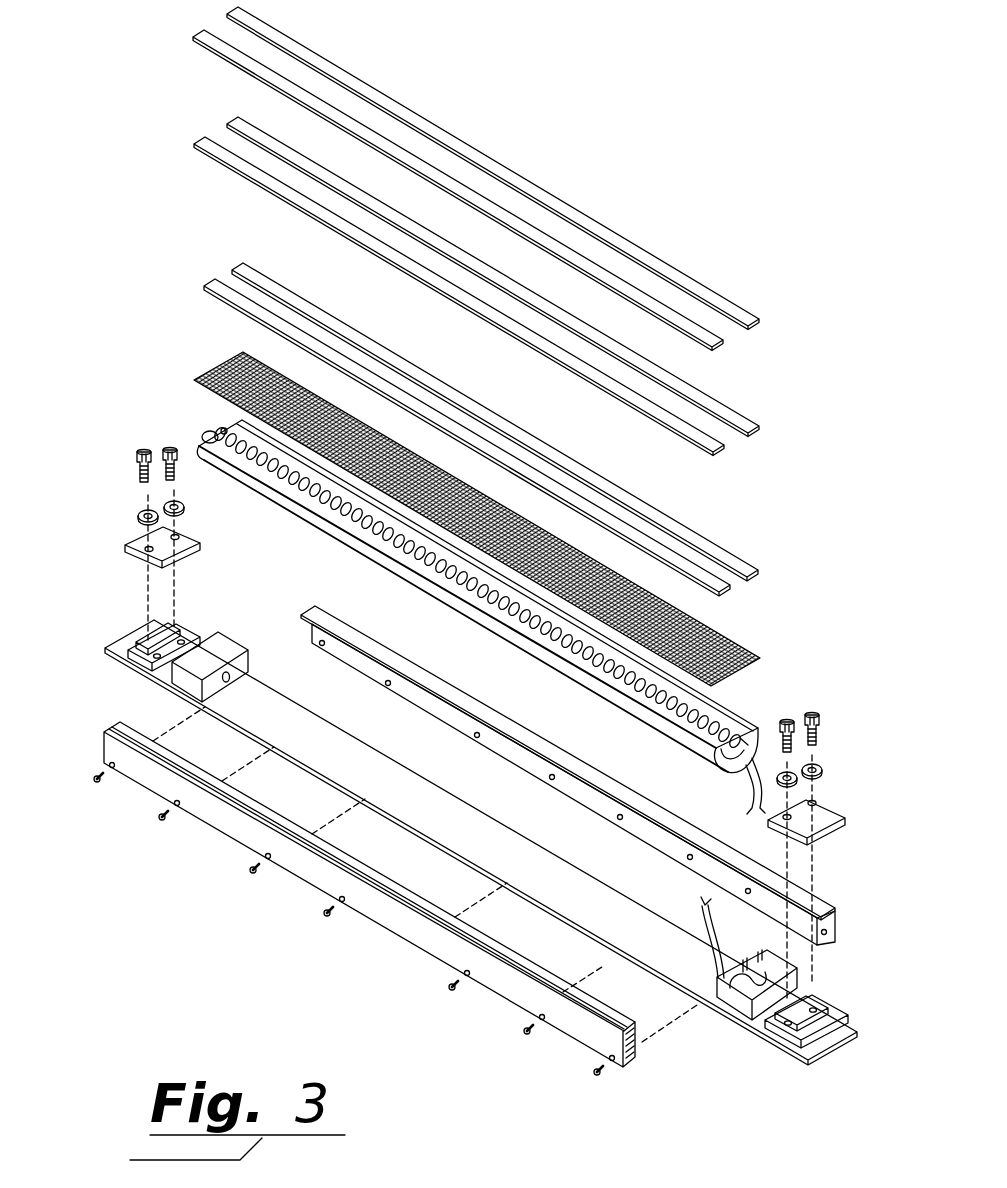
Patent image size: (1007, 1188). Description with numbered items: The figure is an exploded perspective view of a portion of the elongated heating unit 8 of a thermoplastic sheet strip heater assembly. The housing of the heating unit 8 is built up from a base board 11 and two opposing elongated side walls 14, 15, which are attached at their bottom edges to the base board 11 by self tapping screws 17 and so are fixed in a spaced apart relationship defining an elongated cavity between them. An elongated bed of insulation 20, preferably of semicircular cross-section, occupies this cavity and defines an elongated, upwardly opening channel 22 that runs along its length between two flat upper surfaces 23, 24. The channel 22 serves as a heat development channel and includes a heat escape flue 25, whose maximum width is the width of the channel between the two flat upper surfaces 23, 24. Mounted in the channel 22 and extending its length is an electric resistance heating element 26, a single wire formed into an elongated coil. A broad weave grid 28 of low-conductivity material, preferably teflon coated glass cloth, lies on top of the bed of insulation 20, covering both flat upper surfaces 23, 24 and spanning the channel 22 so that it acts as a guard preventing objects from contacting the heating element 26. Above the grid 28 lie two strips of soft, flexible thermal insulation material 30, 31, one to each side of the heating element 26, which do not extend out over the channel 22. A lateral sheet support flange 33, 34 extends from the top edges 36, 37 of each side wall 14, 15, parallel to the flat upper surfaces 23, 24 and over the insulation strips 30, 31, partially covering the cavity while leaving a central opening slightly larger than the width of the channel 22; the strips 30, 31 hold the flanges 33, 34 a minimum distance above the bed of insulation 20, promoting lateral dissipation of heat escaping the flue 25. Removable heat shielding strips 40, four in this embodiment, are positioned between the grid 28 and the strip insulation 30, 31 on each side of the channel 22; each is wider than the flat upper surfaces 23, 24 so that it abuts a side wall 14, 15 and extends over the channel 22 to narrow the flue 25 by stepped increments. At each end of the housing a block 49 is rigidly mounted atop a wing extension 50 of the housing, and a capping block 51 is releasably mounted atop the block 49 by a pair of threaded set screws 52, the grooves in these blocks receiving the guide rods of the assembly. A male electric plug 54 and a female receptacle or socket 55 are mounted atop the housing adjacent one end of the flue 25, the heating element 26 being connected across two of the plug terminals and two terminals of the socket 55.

The heating unit 8 is at (344, 957).
The base board 11 is at (487, 832).
The side wall 14 is at (432, 947).
The side wall 15 is at (432, 705).
The self tapping screws 17 is at (258, 880).
The bed of insulation 20 is at (494, 632).
The channel 22 is at (742, 720).
The flat upper surface 23 is at (238, 462).
The flat upper surface 24 is at (238, 430).
The heat escape flue 25 is at (722, 709).
The electric resistance heating element 26 is at (633, 683).
The broad weave grid 28 is at (226, 370).
The strip of insulation material 30 is at (525, 228).
The strip of insulation material 31 is at (528, 184).
The lateral sheet support flange 33 is at (277, 823).
The lateral sheet support flange 34 is at (358, 640).
The top edge 36 is at (628, 1062).
The top edge 37 is at (828, 908).
The heat shielding strips 40 is at (418, 265).
The block 49 is at (142, 646).
The wing extension 50 is at (157, 623).
The capping block 51 is at (134, 545).
The threaded set screws 52 is at (170, 450).
The male electric plug 54 is at (720, 978).
The female receptacle or socket 55 is at (752, 960).